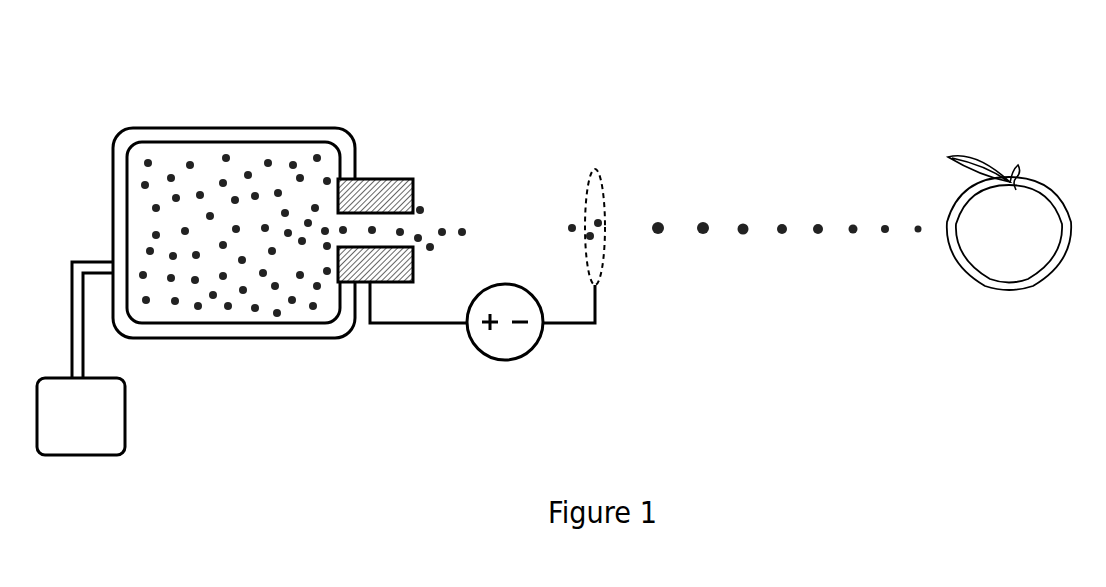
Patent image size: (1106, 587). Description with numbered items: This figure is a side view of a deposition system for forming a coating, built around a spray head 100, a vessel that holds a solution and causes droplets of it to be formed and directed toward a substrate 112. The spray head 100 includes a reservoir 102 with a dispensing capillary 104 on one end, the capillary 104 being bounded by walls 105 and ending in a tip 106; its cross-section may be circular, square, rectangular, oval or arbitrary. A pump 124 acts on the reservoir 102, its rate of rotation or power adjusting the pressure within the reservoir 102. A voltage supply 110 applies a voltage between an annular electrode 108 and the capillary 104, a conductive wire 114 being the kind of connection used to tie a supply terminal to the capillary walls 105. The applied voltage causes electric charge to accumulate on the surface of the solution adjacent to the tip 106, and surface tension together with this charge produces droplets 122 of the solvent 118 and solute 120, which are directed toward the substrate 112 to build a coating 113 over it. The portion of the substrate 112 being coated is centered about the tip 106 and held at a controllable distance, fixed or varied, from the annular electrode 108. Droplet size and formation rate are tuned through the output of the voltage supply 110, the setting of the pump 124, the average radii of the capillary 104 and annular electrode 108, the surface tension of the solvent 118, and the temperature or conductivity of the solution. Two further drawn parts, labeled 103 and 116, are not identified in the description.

The spray head 100 is at (372, 82).
The reservoir 102 is at (403, 120).
The outer housing 103 is at (265, 330).
The capillary 104 is at (417, 348).
The walls of the capillary 105 is at (398, 196).
The tip of the capillary 106 is at (418, 237).
The annular electrode 108 is at (600, 170).
The voltage supply 110 is at (508, 350).
The substrate 112 is at (1000, 243).
The coating 113 is at (985, 282).
The conductive wire 114 is at (423, 323).
The second electrical lead 116 is at (570, 325).
The solvent 118 is at (162, 318).
The solute 120 is at (210, 298).
The droplets 122 is at (662, 245).
The pump 124 is at (110, 445).